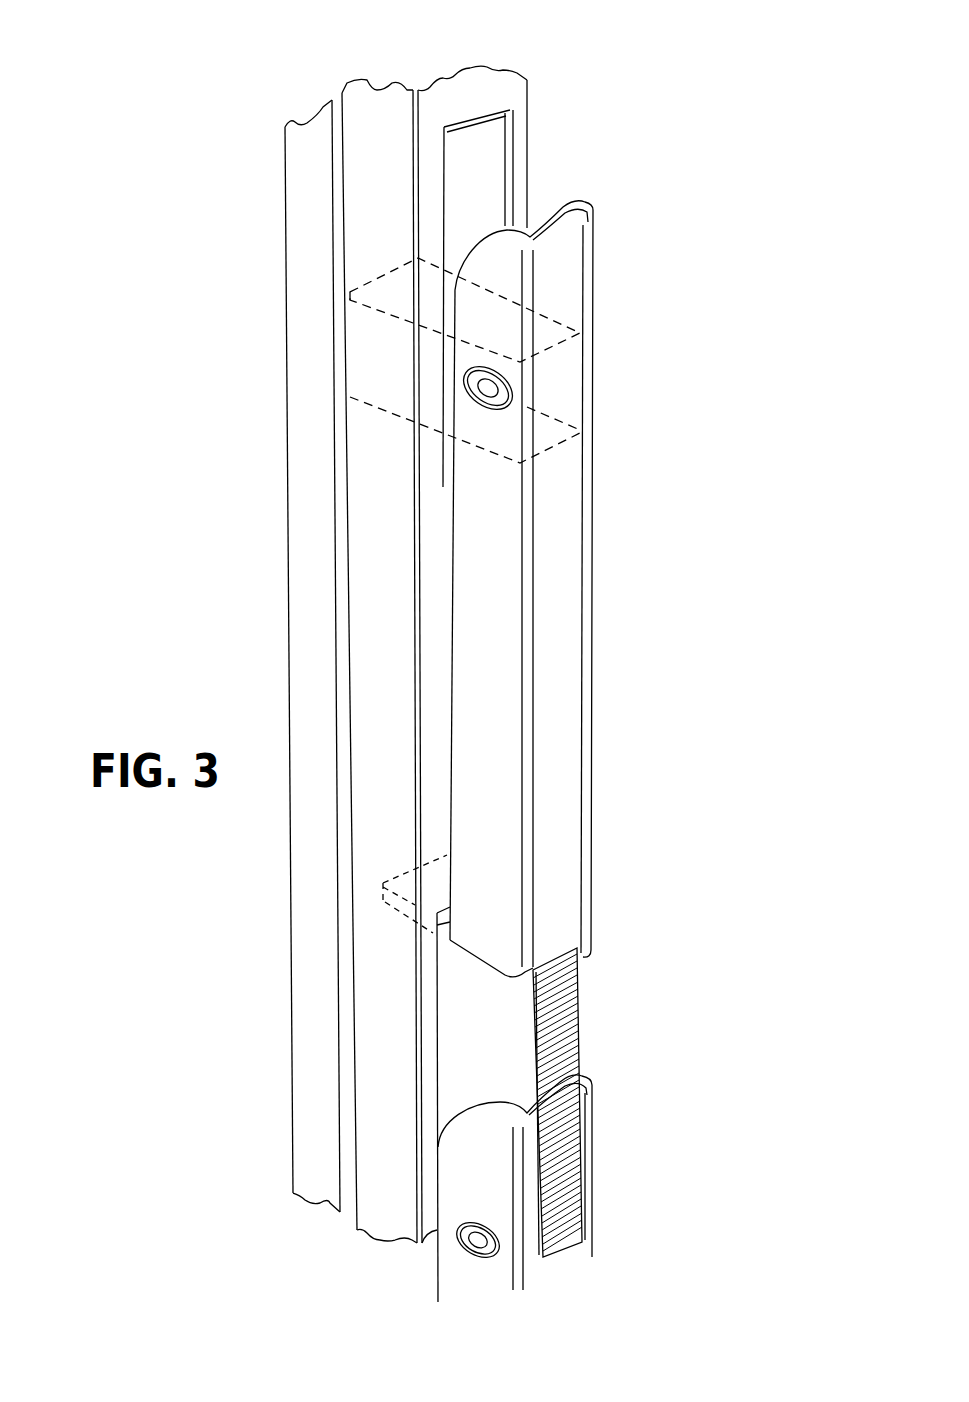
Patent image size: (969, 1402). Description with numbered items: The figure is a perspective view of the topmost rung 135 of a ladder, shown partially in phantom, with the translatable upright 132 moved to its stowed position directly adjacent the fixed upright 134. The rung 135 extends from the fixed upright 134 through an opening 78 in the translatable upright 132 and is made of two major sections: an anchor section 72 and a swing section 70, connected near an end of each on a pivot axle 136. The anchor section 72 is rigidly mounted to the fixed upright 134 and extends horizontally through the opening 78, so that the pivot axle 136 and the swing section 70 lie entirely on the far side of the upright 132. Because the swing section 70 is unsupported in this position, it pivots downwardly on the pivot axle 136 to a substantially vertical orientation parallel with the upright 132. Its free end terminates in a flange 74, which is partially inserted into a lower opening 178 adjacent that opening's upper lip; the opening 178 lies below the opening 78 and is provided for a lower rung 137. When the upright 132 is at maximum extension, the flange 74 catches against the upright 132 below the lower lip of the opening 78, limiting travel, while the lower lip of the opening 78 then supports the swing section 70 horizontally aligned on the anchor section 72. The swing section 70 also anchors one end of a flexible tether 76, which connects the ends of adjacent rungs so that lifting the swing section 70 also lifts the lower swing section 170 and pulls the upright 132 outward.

The translatable upright 132 is at (372, 662).
The fixed upright 134 is at (312, 600).
The opening 78 is at (502, 165).
The anchor section 72 is at (580, 333).
The rung 135 is at (593, 358).
The pivot axle 136 is at (580, 432).
The swing section 70 is at (613, 589).
The tether 76 is at (583, 1008).
The rung 137 is at (493, 1197).
The swing section 170 is at (480, 1193).
The opening 178 is at (417, 1003).
The flange 74 is at (380, 917).